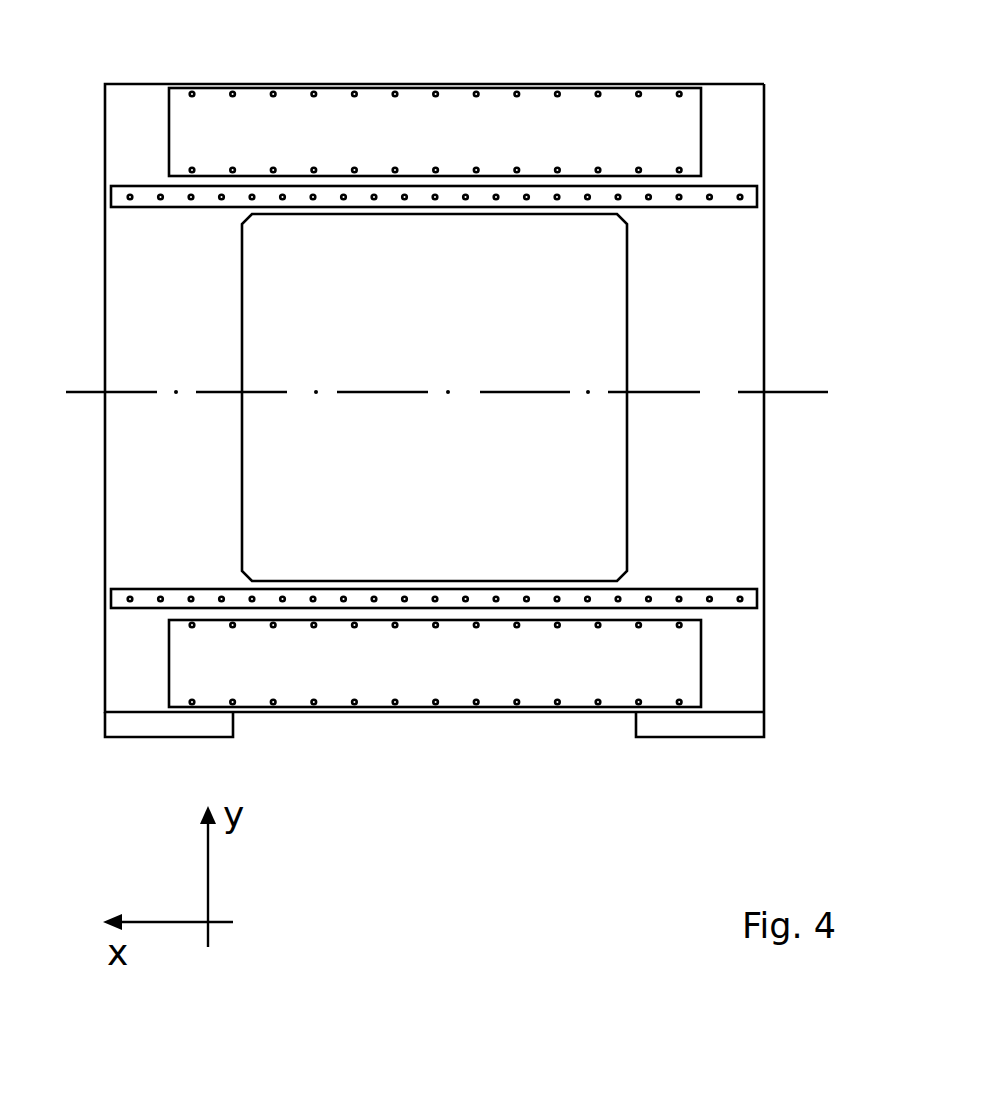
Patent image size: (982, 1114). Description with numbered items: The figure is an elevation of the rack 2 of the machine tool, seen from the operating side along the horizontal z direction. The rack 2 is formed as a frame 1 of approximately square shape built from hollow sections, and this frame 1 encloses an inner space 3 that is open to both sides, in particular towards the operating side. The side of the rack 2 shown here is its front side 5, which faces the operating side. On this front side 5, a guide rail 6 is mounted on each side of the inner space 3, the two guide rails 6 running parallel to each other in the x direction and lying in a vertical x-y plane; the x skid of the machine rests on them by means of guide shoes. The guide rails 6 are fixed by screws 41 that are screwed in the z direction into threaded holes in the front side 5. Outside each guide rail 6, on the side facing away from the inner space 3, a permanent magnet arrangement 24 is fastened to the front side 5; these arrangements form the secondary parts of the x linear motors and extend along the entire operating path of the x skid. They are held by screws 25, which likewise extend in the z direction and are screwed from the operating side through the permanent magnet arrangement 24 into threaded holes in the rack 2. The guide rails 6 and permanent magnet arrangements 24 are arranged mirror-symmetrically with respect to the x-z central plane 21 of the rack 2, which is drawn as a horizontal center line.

The frame 1 is at (143, 97).
The rack 2 is at (528, 724).
The inner space 3 is at (454, 339).
The front side 5 is at (738, 133).
The guide rail 6 is at (508, 200).
The x-z central plane 21 is at (649, 390).
The permanent magnet arrangement 24 is at (422, 147).
The screws 25 is at (518, 170).
The screws 41 is at (373, 199).